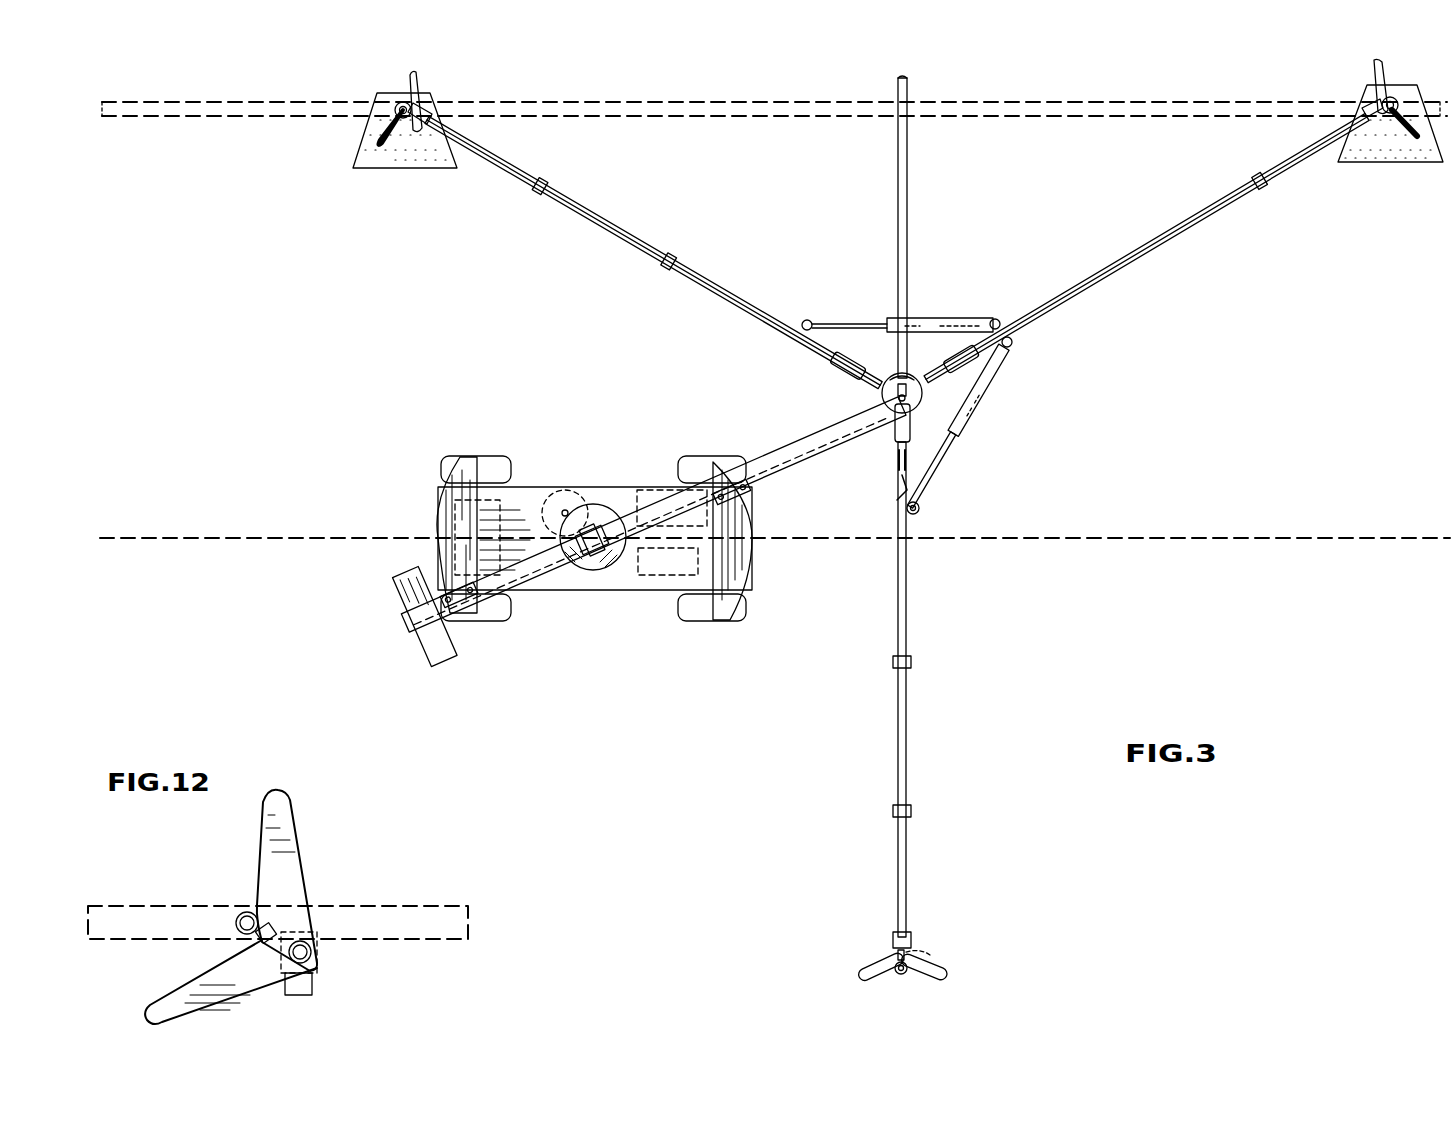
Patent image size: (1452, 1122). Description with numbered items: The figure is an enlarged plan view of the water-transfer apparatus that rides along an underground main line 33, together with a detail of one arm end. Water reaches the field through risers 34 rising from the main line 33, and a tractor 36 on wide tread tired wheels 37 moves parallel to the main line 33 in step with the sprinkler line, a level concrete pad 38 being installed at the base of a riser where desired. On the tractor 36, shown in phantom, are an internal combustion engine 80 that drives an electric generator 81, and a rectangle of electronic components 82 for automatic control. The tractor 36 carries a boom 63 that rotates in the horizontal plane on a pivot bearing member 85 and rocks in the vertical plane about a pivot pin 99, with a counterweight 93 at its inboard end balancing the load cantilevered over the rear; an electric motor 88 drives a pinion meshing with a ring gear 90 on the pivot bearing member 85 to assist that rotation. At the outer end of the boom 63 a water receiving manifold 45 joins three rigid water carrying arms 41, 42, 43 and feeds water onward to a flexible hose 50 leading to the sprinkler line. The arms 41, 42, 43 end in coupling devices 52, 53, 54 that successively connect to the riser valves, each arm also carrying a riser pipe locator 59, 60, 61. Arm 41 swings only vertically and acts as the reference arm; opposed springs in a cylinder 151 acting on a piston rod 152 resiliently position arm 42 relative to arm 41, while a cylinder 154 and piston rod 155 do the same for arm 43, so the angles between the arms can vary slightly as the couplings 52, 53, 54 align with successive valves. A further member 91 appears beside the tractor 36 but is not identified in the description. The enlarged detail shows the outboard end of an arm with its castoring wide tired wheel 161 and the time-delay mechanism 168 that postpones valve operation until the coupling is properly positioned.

In FIG. 3, the underground main line 33 is at (722, 112).
In FIG. 12, the underground main line 33 is at (405, 918).
In FIG. 12, the riser 34 is at (238, 918).
In FIG. 3, the tractor 36 is at (618, 605).
In FIG. 3, the wide tread tired wheels 37 is at (486, 468).
In FIG. 3, the concrete pad 38 is at (368, 158).
In FIG. 3, the water carrying arm 41 is at (1185, 224).
In FIG. 3, the water carrying arm 42 is at (635, 232).
In FIG. 3, the water carrying arm 43 is at (902, 735).
In FIG. 3, the water receiving manifold 45 is at (925, 390).
In FIG. 3, the flexible hose 50 is at (906, 176).
In FIG. 3, the coupling device 52 is at (1398, 98).
In FIG. 3, the coupling device 53 is at (392, 100).
In FIG. 3, the coupling device 54 is at (908, 980).
In FIG. 3, the riser pipe locator 59 is at (1412, 158).
In FIG. 3, the riser pipe locator 60 is at (388, 155).
In FIG. 12, the riser pipe locator 60 is at (292, 845).
In FIG. 3, the riser pipe locator 61 is at (935, 968).
In FIG. 3, the boom 63 is at (808, 460).
In FIG. 3, the internal combustion engine 80 is at (495, 500).
In FIG. 3, the electric generator 81 is at (640, 488).
In FIG. 3, the electronic components 82 is at (665, 570).
In FIG. 3, the pivot bearing member 85 is at (588, 505).
In FIG. 3, the electric motor 88 is at (558, 493).
In FIG. 3, the ring gear 90 is at (458, 592).
In FIG. 3, the bumper 91 is at (450, 524).
In FIG. 3, the counterweight 93 is at (438, 662).
In FIG. 3, the pivot pin 99 is at (598, 572).
In FIG. 3, the cylinder 151 is at (938, 318).
In FIG. 3, the piston rod 152 is at (862, 318).
In FIG. 3, the cylinder 154 is at (990, 370).
In FIG. 3, the piston rod 155 is at (940, 460).
In FIG. 12, the wide tired wheel 161 is at (312, 990).
In FIG. 12, the time-delay mechanism 168 is at (270, 945).